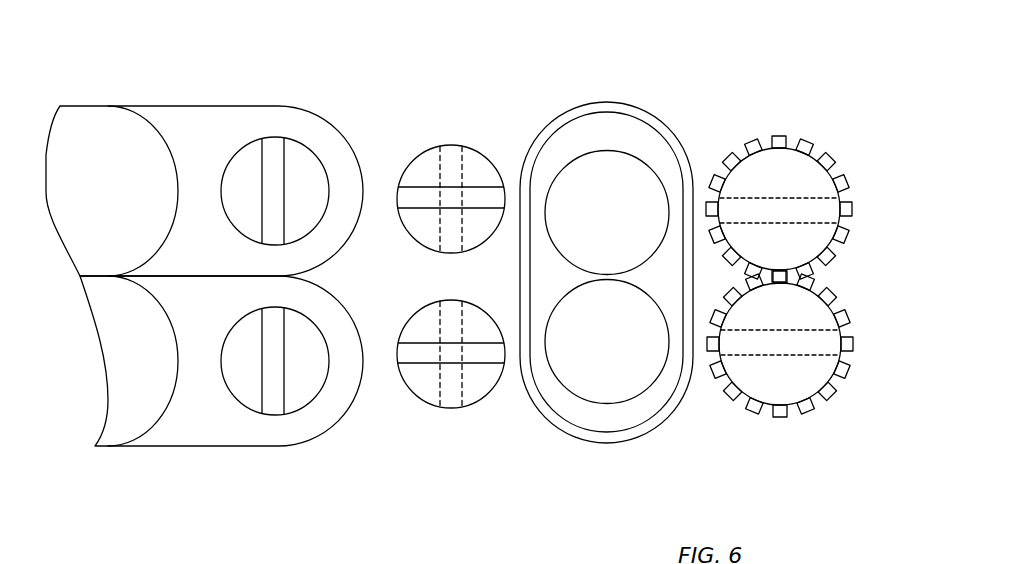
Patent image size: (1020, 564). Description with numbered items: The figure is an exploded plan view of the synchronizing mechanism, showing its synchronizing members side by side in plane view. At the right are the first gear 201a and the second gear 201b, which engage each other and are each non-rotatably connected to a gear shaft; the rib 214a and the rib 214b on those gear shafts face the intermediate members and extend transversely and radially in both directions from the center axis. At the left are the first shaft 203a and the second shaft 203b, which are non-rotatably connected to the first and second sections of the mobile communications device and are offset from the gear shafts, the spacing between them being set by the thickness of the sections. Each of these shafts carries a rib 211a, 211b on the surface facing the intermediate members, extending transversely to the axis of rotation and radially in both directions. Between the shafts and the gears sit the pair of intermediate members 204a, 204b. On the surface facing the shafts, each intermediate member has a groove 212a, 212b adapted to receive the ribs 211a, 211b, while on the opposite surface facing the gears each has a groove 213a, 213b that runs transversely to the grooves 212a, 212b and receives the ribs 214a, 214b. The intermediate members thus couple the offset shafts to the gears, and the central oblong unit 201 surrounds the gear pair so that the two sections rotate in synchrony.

The developing roller unit 201 is at (578, 333).
The first gear 201a is at (818, 158).
The second gear 201b is at (833, 392).
The first shaft 203a is at (223, 106).
The second shaft 203b is at (208, 446).
The intermediate member 204a is at (493, 157).
The intermediate member 204b is at (408, 322).
The rib 211a is at (307, 106).
The rib 211b is at (282, 446).
The groove 212a is at (450, 153).
The groove 212b is at (450, 310).
The groove 213a is at (412, 197).
The groove 213b is at (407, 357).
The rib 214a is at (853, 193).
The rib 214b is at (850, 327).